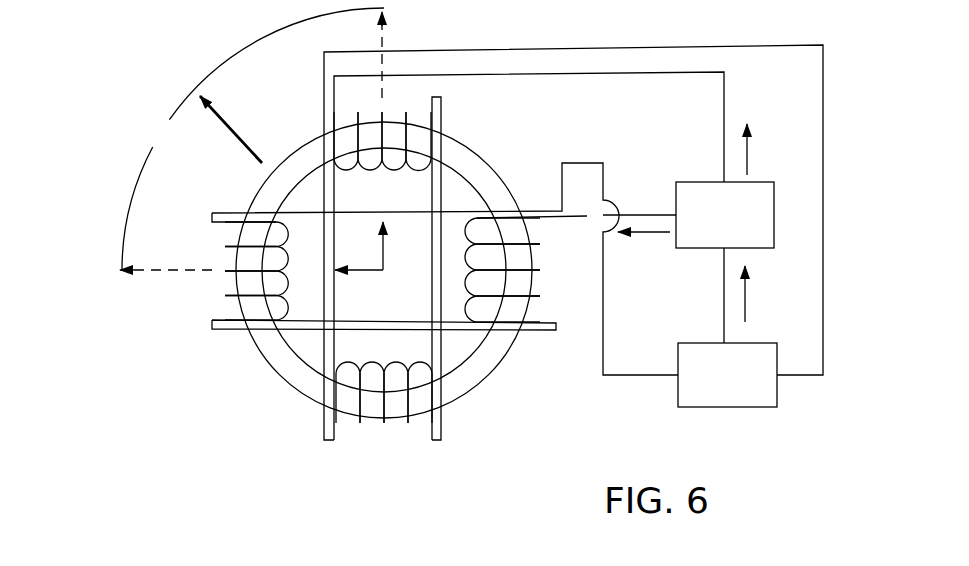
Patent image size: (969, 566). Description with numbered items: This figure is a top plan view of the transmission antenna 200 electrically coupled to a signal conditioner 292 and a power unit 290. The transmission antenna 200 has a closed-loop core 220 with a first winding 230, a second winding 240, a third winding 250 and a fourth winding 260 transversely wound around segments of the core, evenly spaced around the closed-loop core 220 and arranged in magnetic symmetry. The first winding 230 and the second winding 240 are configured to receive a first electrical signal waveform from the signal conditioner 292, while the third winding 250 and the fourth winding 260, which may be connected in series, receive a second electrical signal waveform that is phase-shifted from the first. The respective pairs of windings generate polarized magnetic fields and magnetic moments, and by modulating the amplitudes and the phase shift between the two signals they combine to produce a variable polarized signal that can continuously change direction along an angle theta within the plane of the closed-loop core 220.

The transmission antenna 200 is at (113, 147).
The closed-loop core 220 is at (478, 170).
The first winding 230 is at (563, 302).
The second winding 240 is at (181, 313).
The third winding 250 is at (305, 137).
The fourth winding 260 is at (410, 445).
The power unit 290 is at (727, 357).
The signal conditioner 292 is at (697, 181).